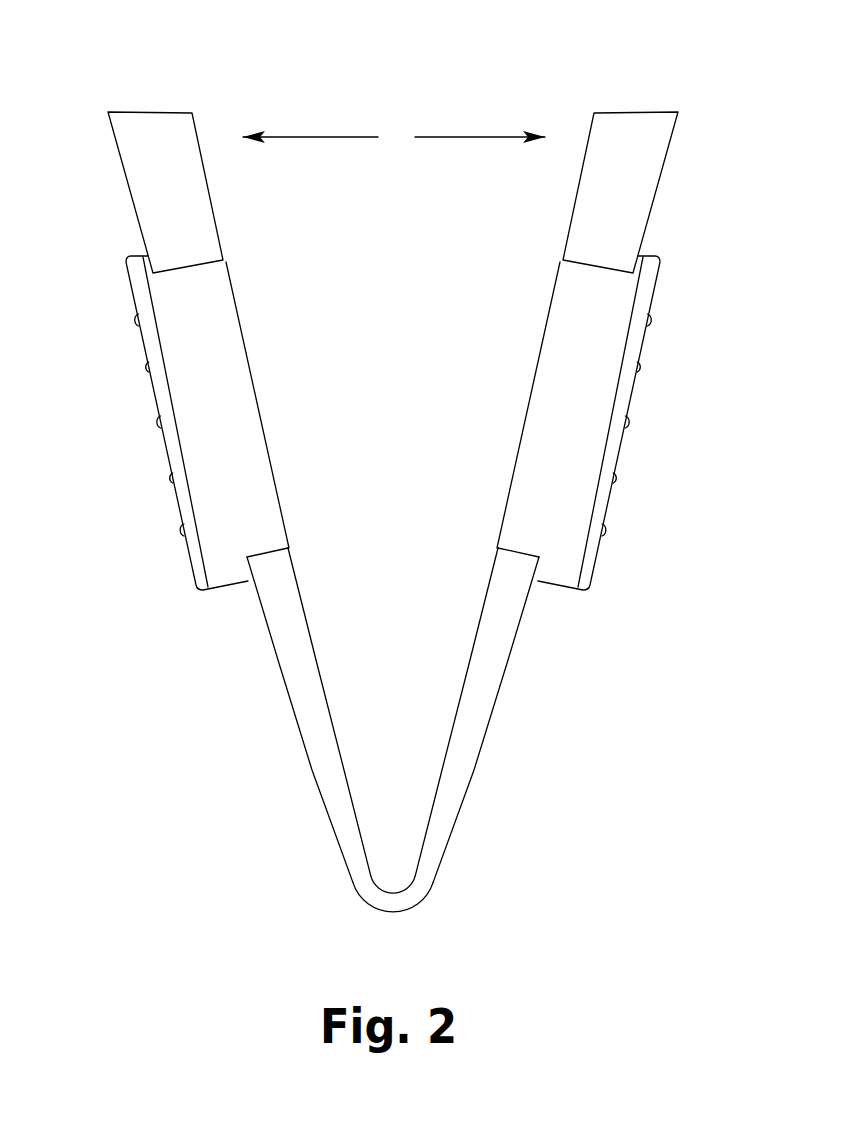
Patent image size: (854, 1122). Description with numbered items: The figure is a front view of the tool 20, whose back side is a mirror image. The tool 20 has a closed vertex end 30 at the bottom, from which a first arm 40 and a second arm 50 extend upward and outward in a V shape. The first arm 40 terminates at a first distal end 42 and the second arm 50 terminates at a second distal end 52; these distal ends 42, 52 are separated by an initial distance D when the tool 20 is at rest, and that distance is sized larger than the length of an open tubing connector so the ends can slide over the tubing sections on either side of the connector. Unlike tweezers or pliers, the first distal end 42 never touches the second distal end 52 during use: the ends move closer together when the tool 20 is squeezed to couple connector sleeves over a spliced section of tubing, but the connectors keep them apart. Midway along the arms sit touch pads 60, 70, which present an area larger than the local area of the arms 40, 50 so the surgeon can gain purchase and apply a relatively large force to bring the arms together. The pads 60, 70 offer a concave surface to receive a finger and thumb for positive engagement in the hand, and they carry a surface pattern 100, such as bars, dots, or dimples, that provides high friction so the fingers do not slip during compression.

The tool 20 is at (448, 56).
The vertex end 30 is at (392, 907).
The first arm 40 is at (302, 690).
The second arm 50 is at (482, 674).
The first distal end 42 is at (153, 111).
The second distal end 52 is at (636, 111).
The touch pad 60 is at (195, 408).
The touch pad 70 is at (589, 423).
The surface pattern 100 is at (135, 325).